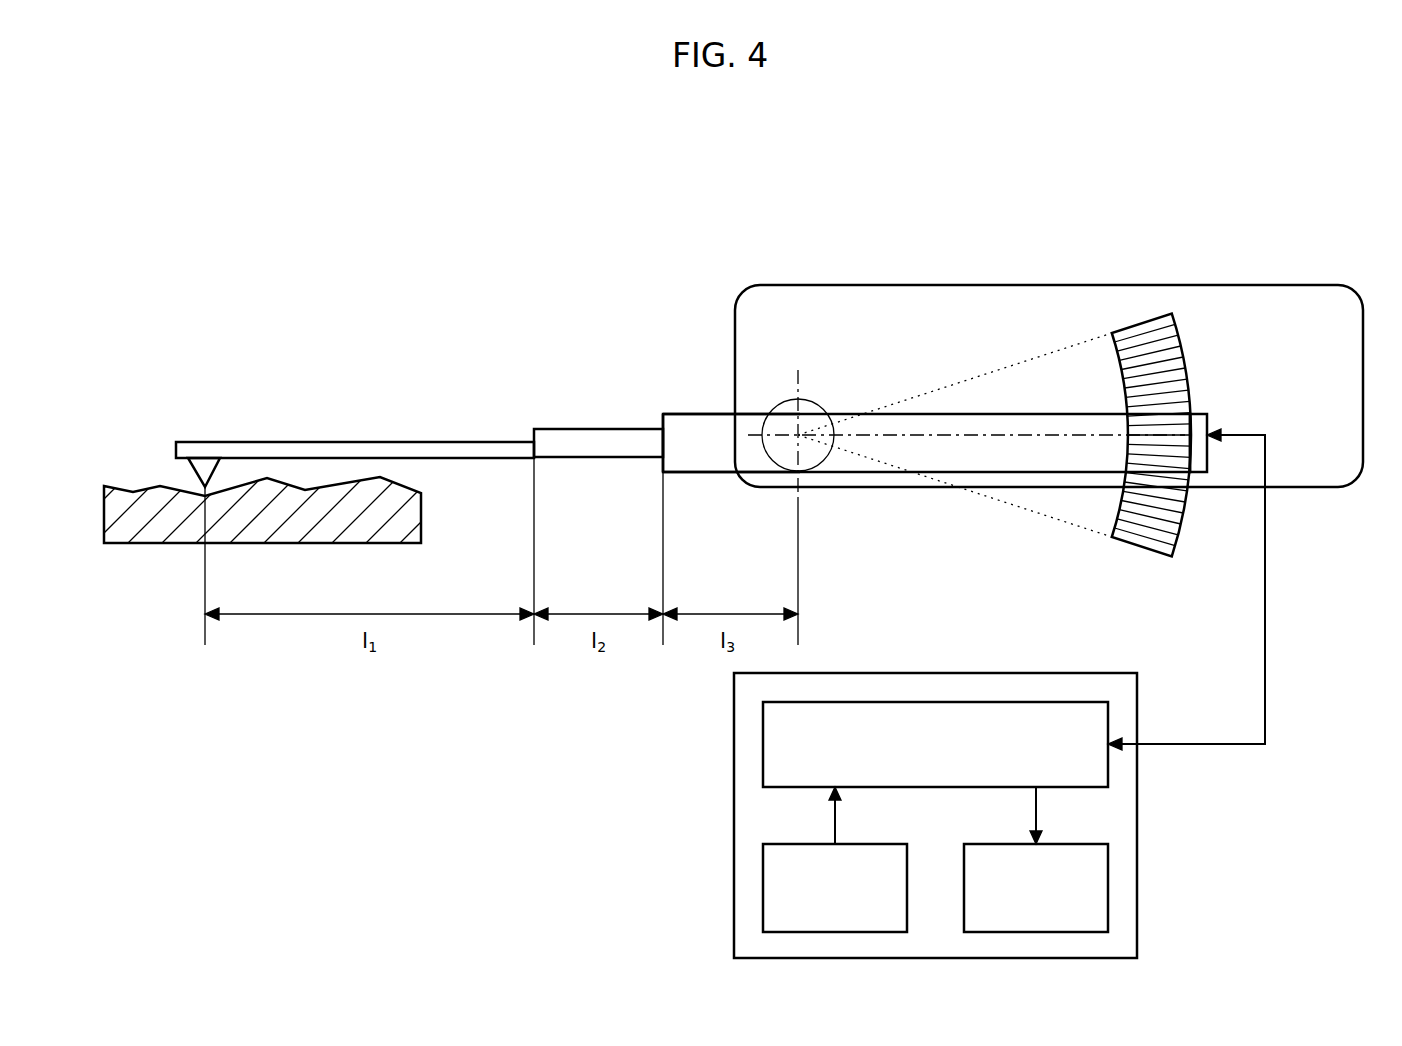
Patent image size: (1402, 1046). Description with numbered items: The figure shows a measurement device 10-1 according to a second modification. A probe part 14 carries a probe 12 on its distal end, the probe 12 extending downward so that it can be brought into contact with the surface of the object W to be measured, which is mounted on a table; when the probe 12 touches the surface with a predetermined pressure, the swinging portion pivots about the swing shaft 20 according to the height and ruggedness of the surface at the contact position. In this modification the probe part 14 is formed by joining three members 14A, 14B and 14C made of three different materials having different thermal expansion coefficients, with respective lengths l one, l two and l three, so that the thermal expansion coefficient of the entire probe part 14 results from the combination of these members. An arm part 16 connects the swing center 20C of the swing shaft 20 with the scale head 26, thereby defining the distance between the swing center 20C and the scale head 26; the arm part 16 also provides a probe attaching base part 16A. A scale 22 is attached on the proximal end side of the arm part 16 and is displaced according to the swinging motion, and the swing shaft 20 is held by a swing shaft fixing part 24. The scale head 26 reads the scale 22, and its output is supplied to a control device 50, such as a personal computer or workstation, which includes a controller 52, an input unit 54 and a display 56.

The measurement device 10-1 is at (298, 295).
The probe 12 is at (168, 469).
The object to be measured W is at (422, 511).
The probe part 14 is at (707, 343).
The member 14A is at (324, 442).
The member 14B is at (578, 429).
The member 14C is at (705, 414).
The arm part 16 is at (975, 473).
The probe attaching base part 16A is at (1214, 393).
The swing shaft 20 is at (793, 404).
The swing center 20C is at (788, 451).
The scale 22 is at (1152, 325).
The swing shaft fixing part 24 is at (1040, 285).
The scale head 26 is at (1242, 421).
The control device 50 is at (938, 672).
The controller 52 is at (763, 748).
The input unit 54 is at (763, 892).
The display 56 is at (1108, 886).